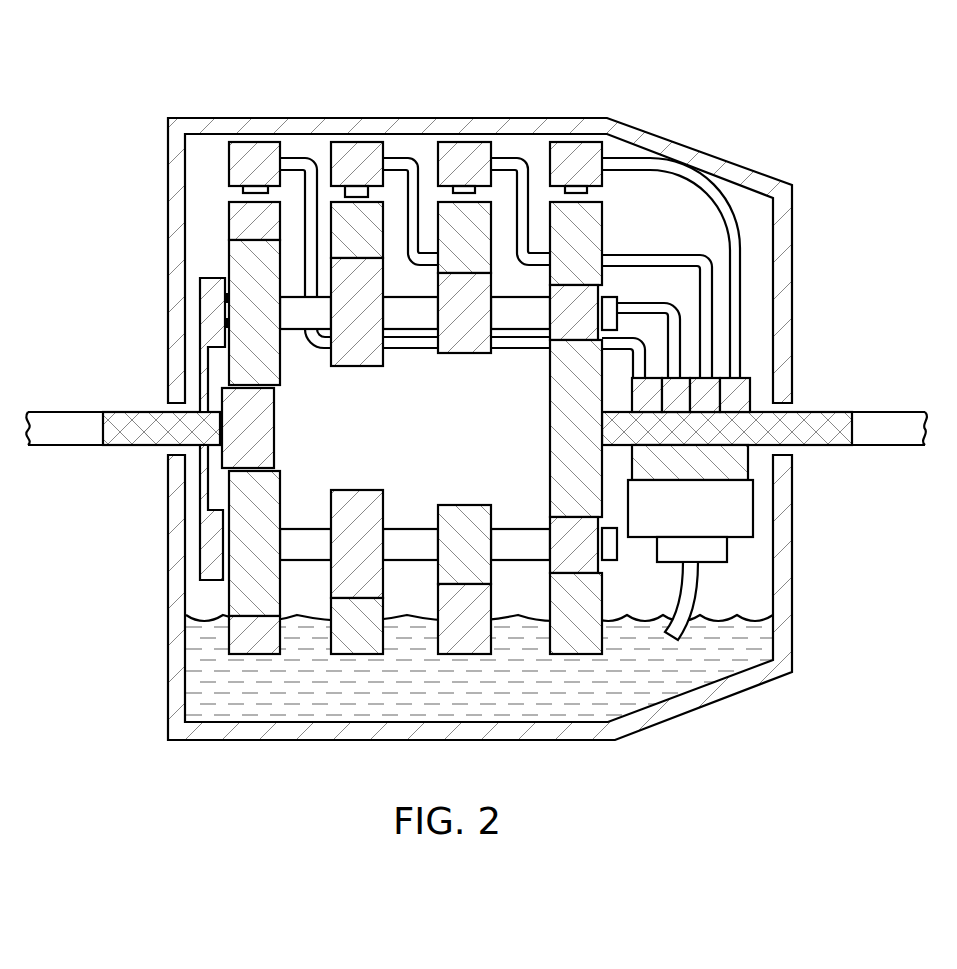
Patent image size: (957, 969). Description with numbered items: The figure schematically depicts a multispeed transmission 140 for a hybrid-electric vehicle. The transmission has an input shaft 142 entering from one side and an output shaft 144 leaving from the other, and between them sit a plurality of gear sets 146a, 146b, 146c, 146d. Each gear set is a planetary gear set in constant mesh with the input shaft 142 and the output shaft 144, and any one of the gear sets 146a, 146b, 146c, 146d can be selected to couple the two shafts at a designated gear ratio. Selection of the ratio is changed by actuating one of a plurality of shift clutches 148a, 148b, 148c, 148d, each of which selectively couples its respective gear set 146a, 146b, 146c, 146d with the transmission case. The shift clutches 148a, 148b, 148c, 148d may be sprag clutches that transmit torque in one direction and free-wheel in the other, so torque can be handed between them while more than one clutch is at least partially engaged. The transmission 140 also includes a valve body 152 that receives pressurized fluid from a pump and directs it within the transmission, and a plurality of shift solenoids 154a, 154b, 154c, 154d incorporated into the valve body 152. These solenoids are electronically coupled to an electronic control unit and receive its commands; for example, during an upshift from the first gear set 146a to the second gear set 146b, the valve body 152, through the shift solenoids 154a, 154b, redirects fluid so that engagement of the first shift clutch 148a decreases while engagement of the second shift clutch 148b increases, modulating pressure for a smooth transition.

The multispeed transmission 140 is at (712, 93).
The input shaft 142 is at (72, 447).
The output shaft 144 is at (902, 445).
The first gear set 146a is at (237, 318).
The second gear set 146b is at (362, 362).
The third gear set 146c is at (467, 210).
The fourth gear set 146d is at (575, 210).
The first shift clutch 148a is at (256, 150).
The second shift clutch 148b is at (362, 150).
The third shift clutch 148c is at (470, 143).
The fourth shift clutch 148d is at (590, 148).
The valve body 152 is at (748, 523).
The first shift solenoid 154a is at (645, 392).
The second shift solenoid 154b is at (682, 392).
The third shift solenoid 154c is at (712, 392).
The fourth shift solenoid 154d is at (745, 400).